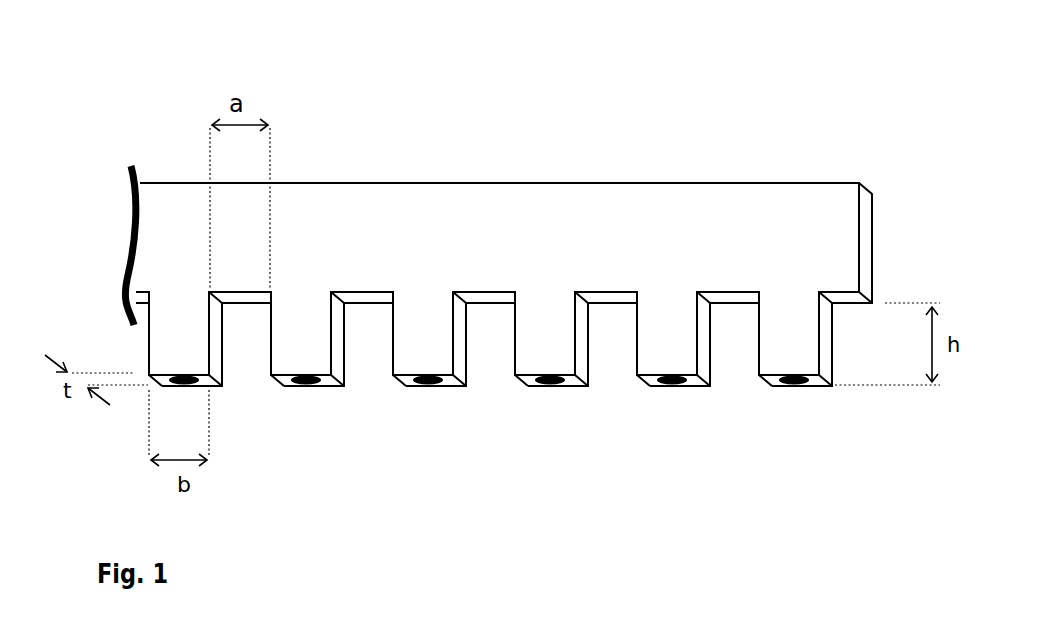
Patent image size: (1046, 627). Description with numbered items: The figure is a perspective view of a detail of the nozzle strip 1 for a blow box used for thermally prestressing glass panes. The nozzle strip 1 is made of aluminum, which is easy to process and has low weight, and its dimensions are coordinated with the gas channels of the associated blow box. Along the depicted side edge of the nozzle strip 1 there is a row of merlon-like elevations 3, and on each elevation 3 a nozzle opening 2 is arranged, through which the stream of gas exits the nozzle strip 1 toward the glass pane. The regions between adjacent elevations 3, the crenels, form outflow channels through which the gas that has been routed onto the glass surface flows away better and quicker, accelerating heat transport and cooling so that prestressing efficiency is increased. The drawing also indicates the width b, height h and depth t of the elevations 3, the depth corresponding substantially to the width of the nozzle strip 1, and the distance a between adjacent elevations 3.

The nozzle strip 1 is at (547, 121).
The nozzle opening 2 is at (187, 383).
The merlon-like elevation 3 is at (187, 342).